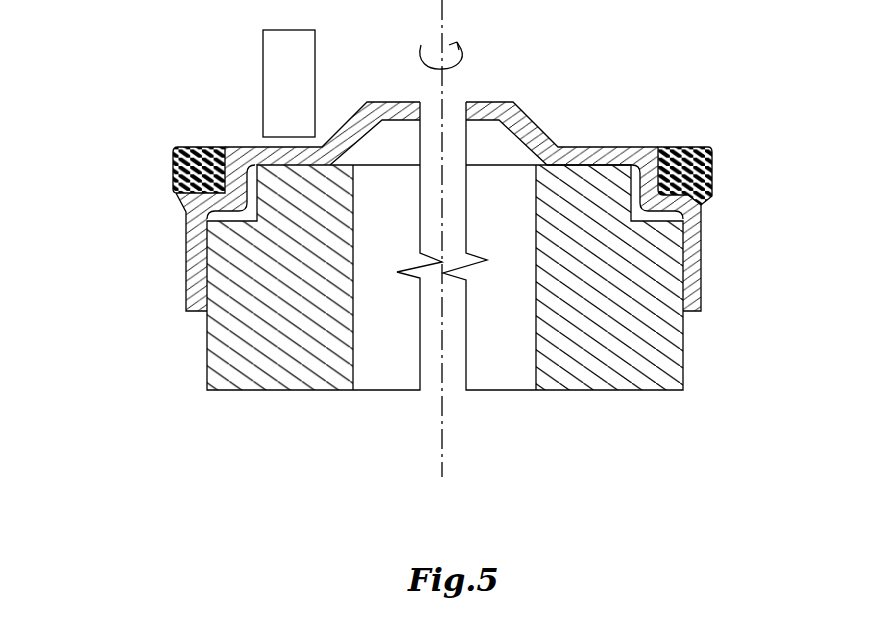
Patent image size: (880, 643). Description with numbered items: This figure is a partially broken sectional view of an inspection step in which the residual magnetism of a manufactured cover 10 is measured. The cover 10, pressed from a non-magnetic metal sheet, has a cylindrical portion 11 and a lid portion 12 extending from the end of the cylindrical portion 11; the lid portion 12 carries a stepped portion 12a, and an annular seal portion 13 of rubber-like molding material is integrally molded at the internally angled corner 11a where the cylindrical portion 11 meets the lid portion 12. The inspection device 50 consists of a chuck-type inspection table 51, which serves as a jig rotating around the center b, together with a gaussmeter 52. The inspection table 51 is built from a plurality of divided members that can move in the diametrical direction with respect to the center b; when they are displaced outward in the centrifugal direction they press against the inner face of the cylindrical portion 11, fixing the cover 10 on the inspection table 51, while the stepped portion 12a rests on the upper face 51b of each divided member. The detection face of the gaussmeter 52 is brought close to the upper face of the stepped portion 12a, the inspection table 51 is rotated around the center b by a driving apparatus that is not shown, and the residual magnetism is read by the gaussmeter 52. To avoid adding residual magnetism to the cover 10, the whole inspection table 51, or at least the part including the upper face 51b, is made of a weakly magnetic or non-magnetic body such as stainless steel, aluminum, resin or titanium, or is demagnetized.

The cover 10 is at (532, 113).
The cylindrical portion 11 is at (693, 290).
The corner 11a is at (713, 173).
The lid portion 12 is at (497, 110).
The stepped portion 12a is at (605, 155).
The annular seal portion 13 is at (685, 153).
The inspection device 50 is at (58, 125).
The inspection table 51 is at (228, 270).
The upper face 51b is at (308, 163).
The gaussmeter 52 is at (270, 90).
The center b is at (443, 450).